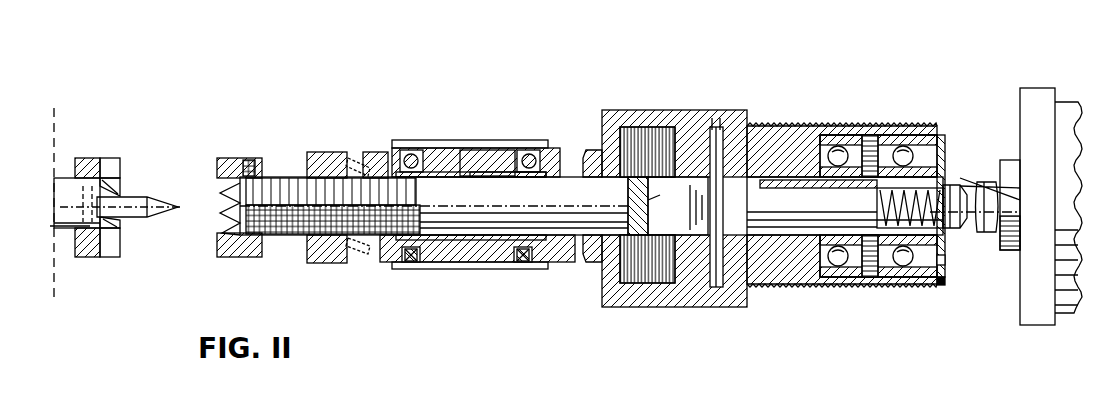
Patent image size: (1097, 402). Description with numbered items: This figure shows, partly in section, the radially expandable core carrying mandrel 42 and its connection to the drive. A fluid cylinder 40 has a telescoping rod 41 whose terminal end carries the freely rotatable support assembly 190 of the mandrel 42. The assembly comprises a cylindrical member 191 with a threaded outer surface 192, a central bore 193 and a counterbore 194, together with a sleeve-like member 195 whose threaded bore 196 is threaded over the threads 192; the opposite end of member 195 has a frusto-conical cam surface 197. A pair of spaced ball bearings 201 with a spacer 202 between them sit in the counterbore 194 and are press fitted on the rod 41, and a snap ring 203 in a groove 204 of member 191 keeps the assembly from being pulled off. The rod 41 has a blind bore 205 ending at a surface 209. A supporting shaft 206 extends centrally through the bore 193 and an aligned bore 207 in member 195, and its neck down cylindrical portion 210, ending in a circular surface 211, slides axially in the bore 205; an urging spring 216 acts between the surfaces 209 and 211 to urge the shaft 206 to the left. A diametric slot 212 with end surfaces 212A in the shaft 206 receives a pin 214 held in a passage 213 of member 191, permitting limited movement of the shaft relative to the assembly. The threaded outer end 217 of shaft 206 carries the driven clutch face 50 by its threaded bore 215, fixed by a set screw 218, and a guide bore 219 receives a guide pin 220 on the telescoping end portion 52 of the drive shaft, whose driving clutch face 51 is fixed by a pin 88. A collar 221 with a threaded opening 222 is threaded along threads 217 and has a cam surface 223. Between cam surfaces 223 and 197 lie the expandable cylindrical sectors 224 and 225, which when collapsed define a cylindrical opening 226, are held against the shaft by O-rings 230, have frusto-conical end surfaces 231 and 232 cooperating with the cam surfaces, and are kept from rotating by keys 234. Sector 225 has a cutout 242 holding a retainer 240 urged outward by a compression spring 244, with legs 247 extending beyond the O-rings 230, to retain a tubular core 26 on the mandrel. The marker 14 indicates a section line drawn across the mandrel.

The cylinder 40 is at (1066, 102).
The telescoping rod 41 is at (986, 182).
The mandrel 42 is at (556, 100).
The driven clutch means 50 is at (222, 195).
The driving clutch means 51 is at (120, 186).
The end portion 52 is at (62, 178).
The pin 88 is at (100, 160).
The section line 14 is at (469, 80).
The core 26 is at (516, 258).
The support assembly 190 is at (829, 101).
The cylindrical member 191 is at (810, 135).
The threaded outer surface 192 is at (810, 286).
The central bore 193 is at (784, 188).
The counterbore 194 is at (945, 270).
The sleeve-like member 195 is at (640, 112).
The threaded bore 196 is at (648, 130).
The frusto-conical cam surface 197 is at (590, 150).
The ball bearings 201 is at (840, 268).
The spacer 202 is at (874, 135).
The snap ring 203 is at (945, 260).
The groove 204 is at (945, 284).
The bore 205 is at (942, 185).
The shaft 206 is at (478, 240).
The bore 207 is at (602, 177).
The surface 209 is at (991, 205).
The cylindrical portion 210 is at (804, 235).
The circular surface 211 is at (878, 196).
The slot 212 is at (636, 210).
The end surface means 212A is at (676, 180).
The passage 213 is at (722, 127).
The pin 214 is at (716, 127).
The threaded bore 215 is at (250, 257).
The urging spring 216 is at (1008, 216).
The threaded terminal outer end 217 is at (282, 177).
The set screw 218 is at (240, 158).
The guide bore 219 is at (264, 228).
The guide pin 220 is at (160, 218).
The collar 221 is at (328, 263).
The central threaded opening 222 is at (318, 176).
The frustoconical cam surface 223 is at (362, 165).
The cylindrical sectors 224 is at (492, 262).
The cylindrical sector 225 is at (494, 160).
The cylindrical opening 226 is at (462, 177).
The O-rings 230 is at (409, 262).
The frusto-conical surface means 231 is at (378, 152).
The frusto-conical surface means 232 is at (592, 262).
The key 234 is at (356, 254).
The retainer 240 is at (452, 150).
The cutout 242 is at (494, 177).
The compression spring 244 is at (474, 148).
The legs 247 is at (418, 154).